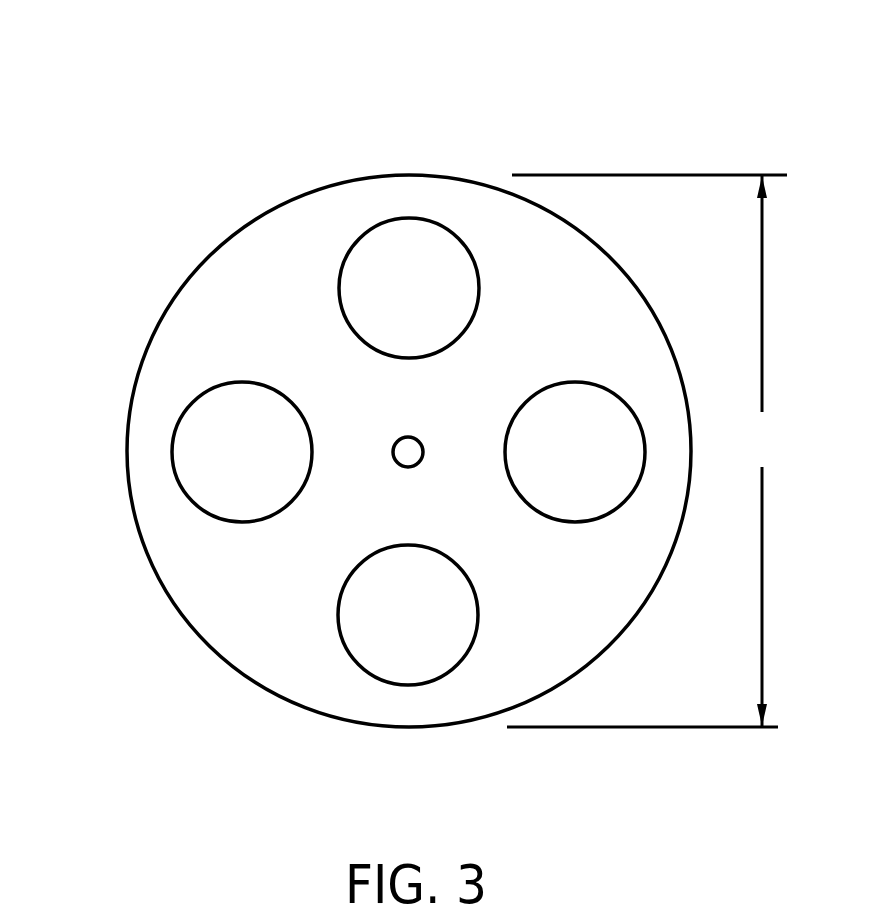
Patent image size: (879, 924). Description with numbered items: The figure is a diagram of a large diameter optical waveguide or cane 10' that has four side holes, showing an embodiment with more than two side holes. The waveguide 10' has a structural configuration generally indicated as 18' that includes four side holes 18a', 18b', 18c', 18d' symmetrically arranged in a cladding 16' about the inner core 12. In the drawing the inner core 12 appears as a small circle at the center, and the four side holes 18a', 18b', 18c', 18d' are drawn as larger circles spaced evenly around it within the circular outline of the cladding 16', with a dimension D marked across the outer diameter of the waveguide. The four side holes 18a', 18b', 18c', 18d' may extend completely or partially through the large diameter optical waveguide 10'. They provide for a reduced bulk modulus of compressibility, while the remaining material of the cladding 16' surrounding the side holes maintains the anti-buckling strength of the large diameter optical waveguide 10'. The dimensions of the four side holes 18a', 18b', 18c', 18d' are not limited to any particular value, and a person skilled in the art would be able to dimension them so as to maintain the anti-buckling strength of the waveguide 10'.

The large diameter optical waveguide 10' is at (410, 420).
The inner core 12 is at (411, 447).
The cladding 16' is at (391, 451).
The structural configuration 18' is at (384, 457).
The side hole 18a' is at (242, 452).
The side hole 18b' is at (409, 288).
The side hole 18c' is at (575, 452).
The side hole 18d' is at (408, 615).
The diameter D is at (647, 451).